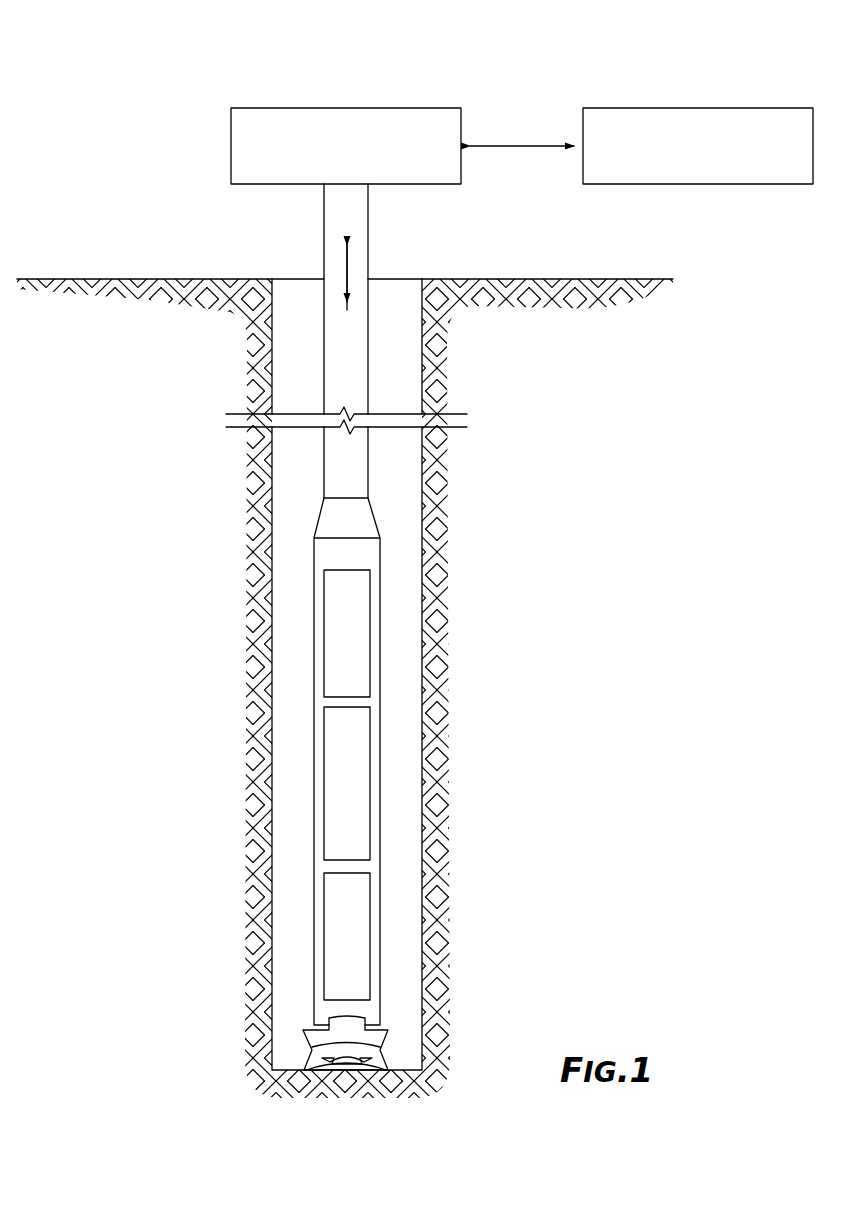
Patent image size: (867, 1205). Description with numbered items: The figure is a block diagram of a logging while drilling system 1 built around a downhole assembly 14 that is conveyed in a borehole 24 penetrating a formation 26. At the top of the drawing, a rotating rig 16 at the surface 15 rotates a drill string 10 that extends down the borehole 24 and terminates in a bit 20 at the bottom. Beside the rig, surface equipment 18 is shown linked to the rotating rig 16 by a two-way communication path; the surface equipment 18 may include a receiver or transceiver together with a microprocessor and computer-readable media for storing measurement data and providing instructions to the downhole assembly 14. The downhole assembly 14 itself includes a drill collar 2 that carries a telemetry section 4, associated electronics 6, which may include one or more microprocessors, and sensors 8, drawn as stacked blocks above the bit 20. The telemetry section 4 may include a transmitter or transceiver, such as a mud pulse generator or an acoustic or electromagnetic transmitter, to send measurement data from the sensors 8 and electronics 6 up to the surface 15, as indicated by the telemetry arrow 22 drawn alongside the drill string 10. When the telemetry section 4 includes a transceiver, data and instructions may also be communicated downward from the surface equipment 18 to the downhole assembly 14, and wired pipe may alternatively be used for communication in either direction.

The logging while drilling system 1 is at (128, 72).
The drill collar 2 is at (403, 761).
The telemetry section 4 is at (371, 620).
The electronics 6 is at (371, 752).
The sensors 8 is at (371, 905).
The drill string 10 is at (370, 363).
The downhole assembly 14 is at (539, 591).
The surface 15 is at (117, 233).
The rotating rig 16 is at (463, 118).
The surface equipment 18 is at (757, 107).
The bit 20 is at (385, 1057).
The telemetry arrow 22 is at (350, 258).
The borehole 24 is at (392, 305).
The formation 26 is at (558, 833).